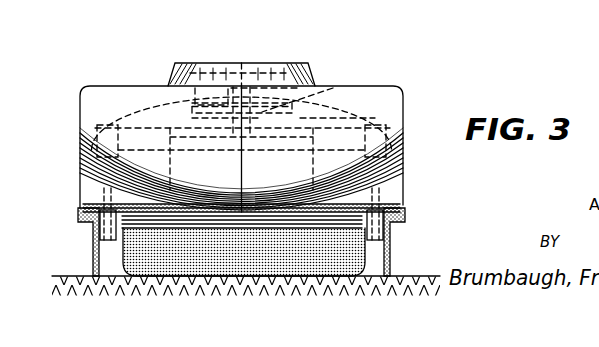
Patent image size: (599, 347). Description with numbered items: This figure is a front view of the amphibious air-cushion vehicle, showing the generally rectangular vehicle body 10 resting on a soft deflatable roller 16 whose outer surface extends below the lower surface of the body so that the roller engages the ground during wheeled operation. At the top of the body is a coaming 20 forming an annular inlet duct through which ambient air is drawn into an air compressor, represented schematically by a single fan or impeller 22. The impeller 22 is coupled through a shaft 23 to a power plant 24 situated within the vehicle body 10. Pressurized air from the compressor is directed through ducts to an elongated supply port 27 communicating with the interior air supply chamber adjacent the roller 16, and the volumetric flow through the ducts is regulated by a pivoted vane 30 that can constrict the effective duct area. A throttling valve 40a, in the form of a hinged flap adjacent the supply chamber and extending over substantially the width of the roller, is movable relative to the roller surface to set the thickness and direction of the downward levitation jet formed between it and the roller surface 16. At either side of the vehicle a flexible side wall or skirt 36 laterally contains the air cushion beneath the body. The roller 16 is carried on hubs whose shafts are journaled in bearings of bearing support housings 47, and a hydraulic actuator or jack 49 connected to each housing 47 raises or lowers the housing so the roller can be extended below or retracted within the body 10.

The vehicle body 10 is at (110, 94).
The soft deflatable roller 16 is at (204, 258).
The coaming 20 is at (306, 70).
The fan or impeller 22 is at (207, 82).
The shaft 23 is at (250, 92).
The power plant 24 is at (300, 148).
The elongated supply port 27 is at (150, 118).
The pivoted vane 30 is at (333, 88).
The flexible side wall or skirt 36 is at (93, 249).
The throttling valve 40a is at (268, 226).
The bearing support housing 47 is at (100, 196).
The hydraulic actuator or jack 49 is at (96, 128).